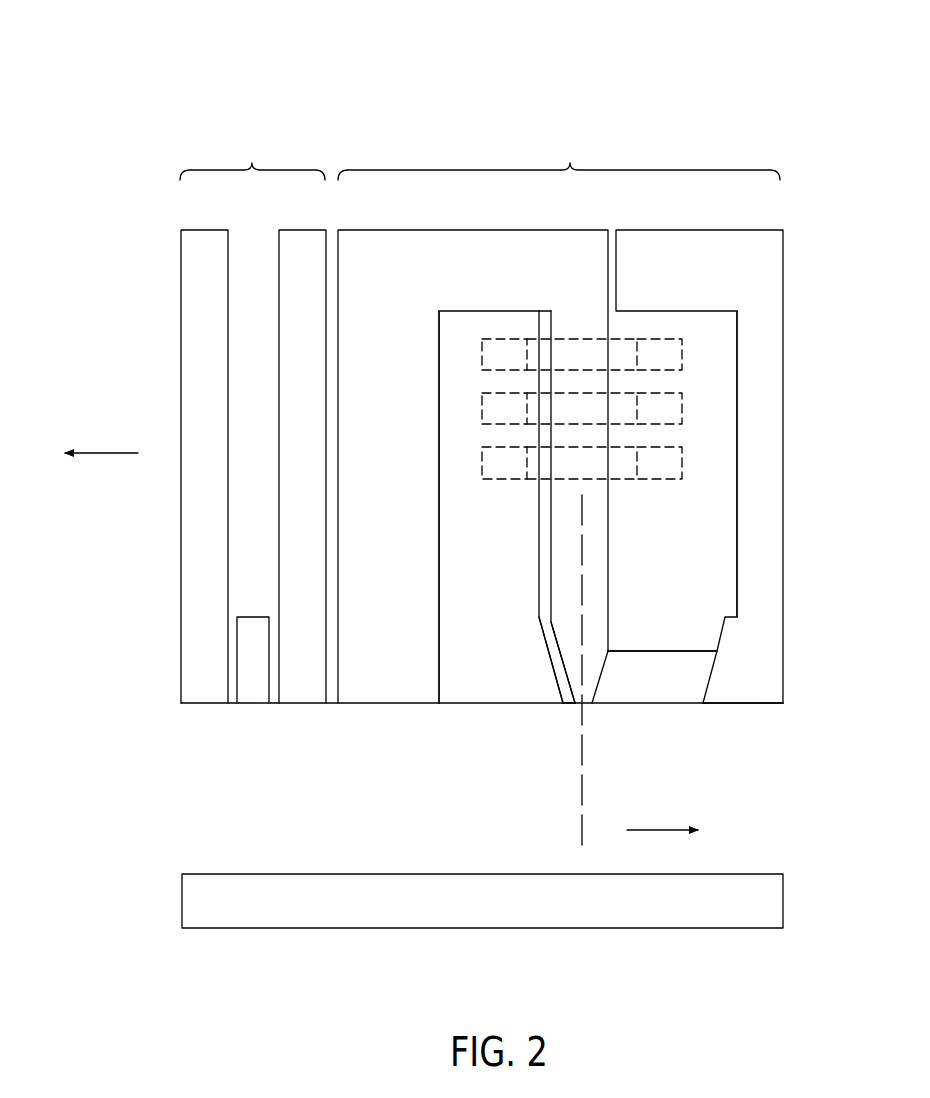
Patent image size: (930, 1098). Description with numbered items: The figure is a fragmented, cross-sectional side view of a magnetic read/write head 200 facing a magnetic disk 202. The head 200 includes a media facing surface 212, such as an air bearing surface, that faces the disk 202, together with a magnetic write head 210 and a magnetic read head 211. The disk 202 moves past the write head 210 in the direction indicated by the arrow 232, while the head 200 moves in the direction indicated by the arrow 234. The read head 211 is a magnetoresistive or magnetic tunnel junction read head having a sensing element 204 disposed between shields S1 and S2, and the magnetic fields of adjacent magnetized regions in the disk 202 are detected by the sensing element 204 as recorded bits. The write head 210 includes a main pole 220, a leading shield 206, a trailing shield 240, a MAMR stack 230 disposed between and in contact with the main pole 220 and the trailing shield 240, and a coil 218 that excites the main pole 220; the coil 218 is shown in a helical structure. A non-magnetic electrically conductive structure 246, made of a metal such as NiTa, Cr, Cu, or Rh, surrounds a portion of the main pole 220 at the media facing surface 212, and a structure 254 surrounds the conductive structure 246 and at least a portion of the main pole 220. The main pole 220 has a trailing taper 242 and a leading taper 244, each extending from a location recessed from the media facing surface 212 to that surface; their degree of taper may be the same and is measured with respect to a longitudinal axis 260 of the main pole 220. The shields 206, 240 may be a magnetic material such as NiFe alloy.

The magnetic read/write head 200 is at (778, 72).
The magnetic disk 202 is at (783, 899).
The MR sensing element 204 is at (250, 705).
The leading shield 206 is at (357, 705).
The magnetic write head 210 is at (559, 154).
The magnetic read head 211 is at (252, 154).
The media facing surface 212 is at (753, 703).
The coil 218 is at (500, 480).
The main pole 220 is at (558, 583).
The MAMR stack 230 is at (652, 705).
The arrow indicating disk motion direction 232 is at (653, 828).
The arrow indicating head motion direction 234 is at (112, 452).
The trailing shield 240 is at (783, 645).
The trailing taper 242 is at (598, 673).
The leading taper 244 is at (555, 640).
The non-magnetic electrically conductive structure 246 is at (558, 665).
The structure 254 is at (460, 683).
The longitudinal axis 260 is at (580, 793).
The MR shield S1 is at (203, 705).
The MR shield S2 is at (295, 705).